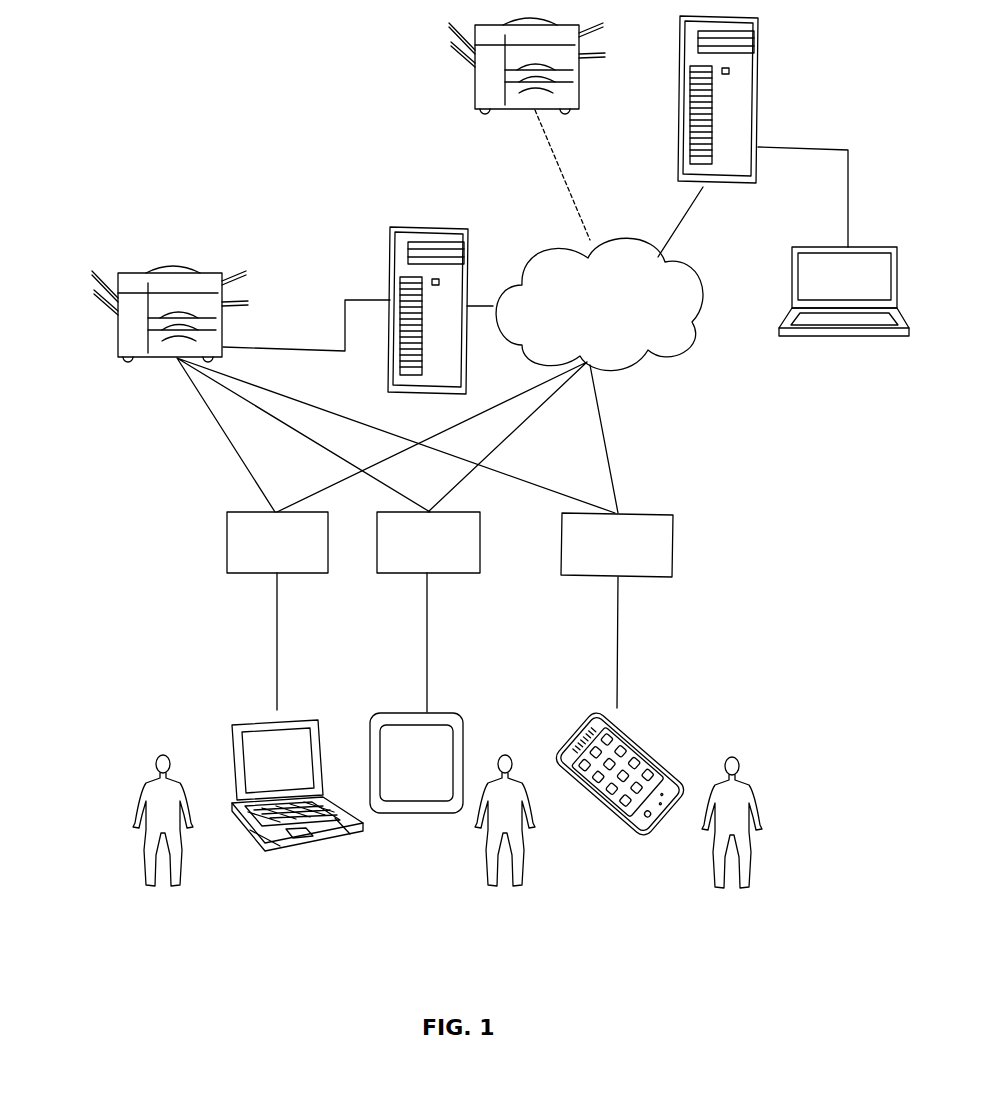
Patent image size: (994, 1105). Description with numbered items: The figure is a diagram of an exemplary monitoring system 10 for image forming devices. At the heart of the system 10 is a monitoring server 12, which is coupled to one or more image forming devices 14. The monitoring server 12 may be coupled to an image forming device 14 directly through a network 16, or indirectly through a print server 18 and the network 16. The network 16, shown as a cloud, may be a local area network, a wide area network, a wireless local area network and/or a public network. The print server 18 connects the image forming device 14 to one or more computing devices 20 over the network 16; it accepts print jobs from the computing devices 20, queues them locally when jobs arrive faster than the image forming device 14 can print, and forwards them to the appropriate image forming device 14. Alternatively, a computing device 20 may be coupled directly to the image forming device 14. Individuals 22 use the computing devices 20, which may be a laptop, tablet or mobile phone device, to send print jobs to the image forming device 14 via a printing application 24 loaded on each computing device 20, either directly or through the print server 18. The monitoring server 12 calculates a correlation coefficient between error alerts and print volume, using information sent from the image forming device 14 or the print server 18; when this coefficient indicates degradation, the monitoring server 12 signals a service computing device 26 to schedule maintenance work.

The system 10 is at (287, 149).
The monitoring server 12 is at (758, 90).
The image forming device 14 is at (473, 87).
The network 16 is at (673, 276).
The print server 18 is at (428, 227).
The computing device 20 is at (330, 686).
The individual 22 is at (165, 885).
The printing application 24 is at (227, 540).
The service computing device 26 is at (825, 338).